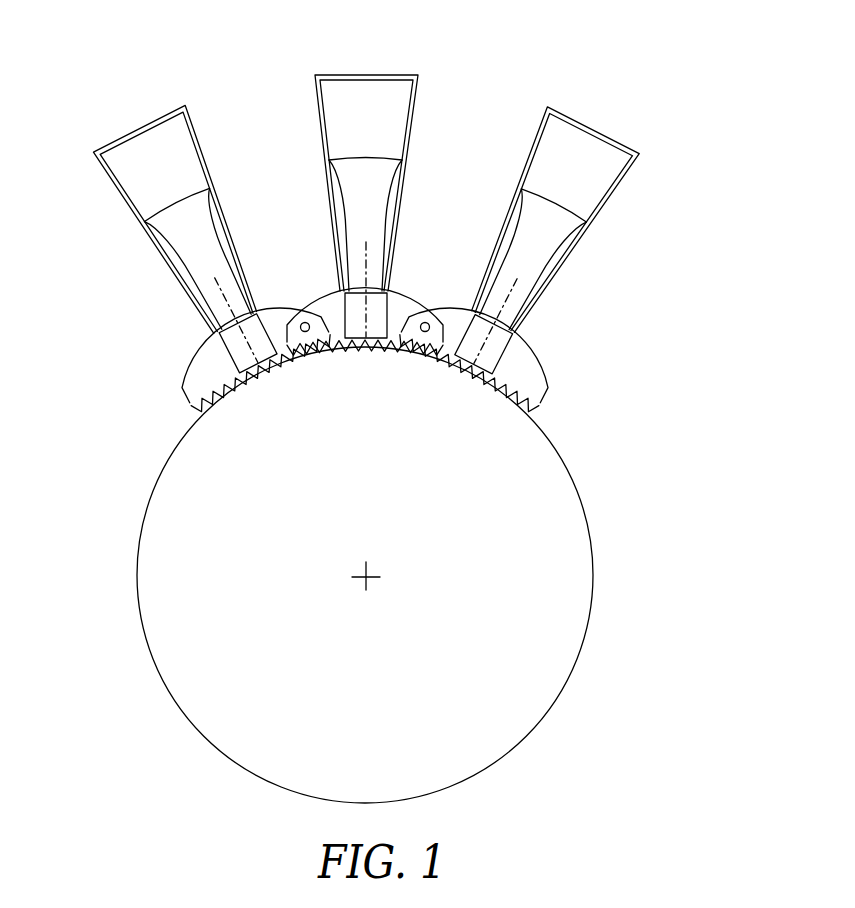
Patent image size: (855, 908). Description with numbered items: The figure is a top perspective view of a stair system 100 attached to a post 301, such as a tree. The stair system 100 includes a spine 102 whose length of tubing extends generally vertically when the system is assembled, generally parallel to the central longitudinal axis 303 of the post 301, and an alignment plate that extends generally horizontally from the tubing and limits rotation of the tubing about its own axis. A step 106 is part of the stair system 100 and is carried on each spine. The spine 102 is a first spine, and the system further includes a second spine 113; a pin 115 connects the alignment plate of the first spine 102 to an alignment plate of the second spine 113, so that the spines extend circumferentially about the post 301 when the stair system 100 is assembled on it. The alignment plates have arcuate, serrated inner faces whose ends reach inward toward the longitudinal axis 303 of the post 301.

The stair system 100 is at (646, 272).
The spine 102 is at (346, 242).
The step 106 is at (160, 120).
The second spine 113 is at (197, 364).
The pin 115 is at (334, 294).
The post 301 is at (575, 667).
The longitudinal axis 303 is at (364, 576).